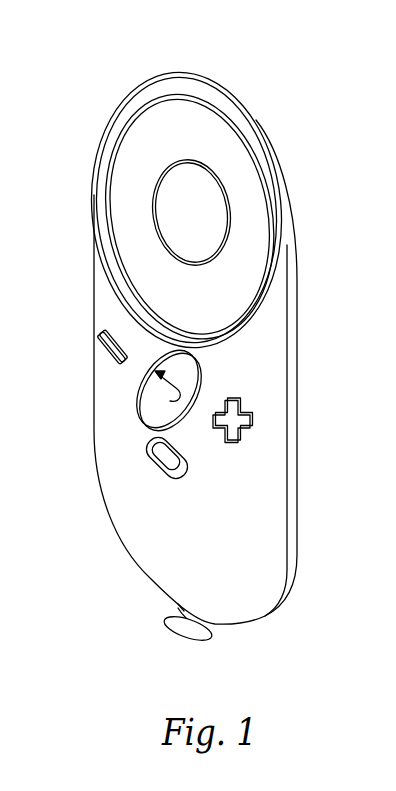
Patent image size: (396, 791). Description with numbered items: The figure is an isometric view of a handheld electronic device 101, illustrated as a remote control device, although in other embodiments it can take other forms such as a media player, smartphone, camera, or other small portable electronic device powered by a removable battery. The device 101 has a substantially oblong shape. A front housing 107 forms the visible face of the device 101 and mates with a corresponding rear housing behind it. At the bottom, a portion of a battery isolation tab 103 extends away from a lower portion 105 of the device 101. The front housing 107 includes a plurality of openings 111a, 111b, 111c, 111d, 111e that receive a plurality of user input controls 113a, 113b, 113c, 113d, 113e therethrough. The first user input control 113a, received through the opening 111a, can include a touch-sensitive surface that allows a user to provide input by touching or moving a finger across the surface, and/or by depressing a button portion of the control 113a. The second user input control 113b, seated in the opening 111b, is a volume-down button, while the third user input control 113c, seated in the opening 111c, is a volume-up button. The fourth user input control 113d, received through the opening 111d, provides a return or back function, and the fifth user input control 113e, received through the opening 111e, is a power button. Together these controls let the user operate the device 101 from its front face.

The handheld electronic device 101 is at (95, 75).
The battery isolation tab 103 is at (212, 640).
The lower portion 105 is at (182, 607).
The front housing 107 is at (99, 275).
The opening 111a is at (263, 172).
The first user input control 113a is at (252, 222).
The opening 111b is at (104, 330).
The second user input control 113b is at (102, 354).
The opening 111c is at (140, 387).
The third user input control 113c is at (162, 402).
The opening 111d is at (236, 404).
The fourth user input control 113d is at (253, 423).
The opening 111e is at (192, 470).
The fifth user input control 113e is at (183, 486).